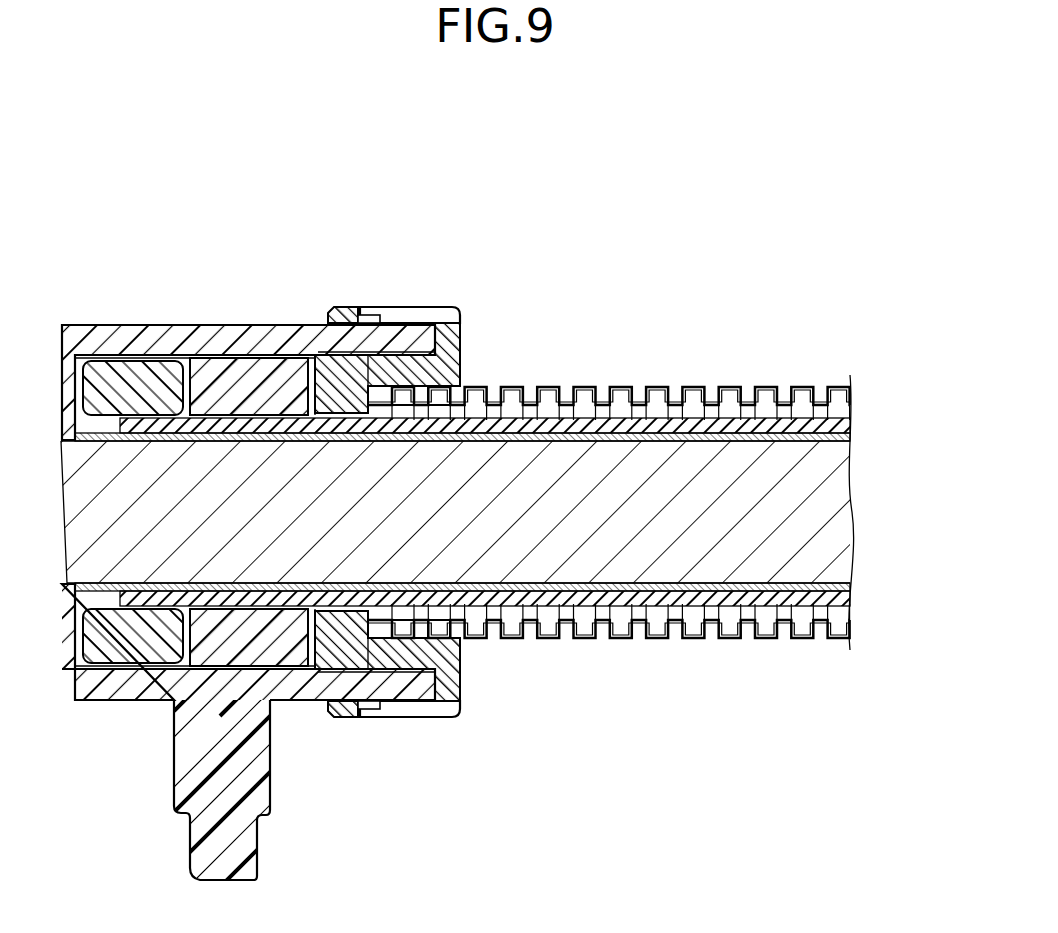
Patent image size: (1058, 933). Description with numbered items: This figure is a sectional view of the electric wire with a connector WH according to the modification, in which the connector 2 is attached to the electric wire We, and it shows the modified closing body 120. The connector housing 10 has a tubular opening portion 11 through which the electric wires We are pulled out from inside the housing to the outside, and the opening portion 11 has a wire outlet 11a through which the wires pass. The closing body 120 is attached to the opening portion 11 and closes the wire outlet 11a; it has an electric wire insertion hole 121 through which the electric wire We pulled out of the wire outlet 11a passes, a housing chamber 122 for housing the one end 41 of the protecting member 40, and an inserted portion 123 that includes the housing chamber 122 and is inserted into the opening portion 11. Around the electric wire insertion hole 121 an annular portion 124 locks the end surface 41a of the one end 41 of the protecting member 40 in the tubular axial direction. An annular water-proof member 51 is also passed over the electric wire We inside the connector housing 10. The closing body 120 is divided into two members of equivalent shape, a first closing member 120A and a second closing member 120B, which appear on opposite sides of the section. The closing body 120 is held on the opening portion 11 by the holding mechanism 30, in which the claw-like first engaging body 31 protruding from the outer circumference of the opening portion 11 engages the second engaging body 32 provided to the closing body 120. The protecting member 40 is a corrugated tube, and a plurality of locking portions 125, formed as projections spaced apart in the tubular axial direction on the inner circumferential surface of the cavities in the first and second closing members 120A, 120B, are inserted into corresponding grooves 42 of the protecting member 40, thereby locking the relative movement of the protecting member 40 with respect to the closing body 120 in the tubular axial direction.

The electric wire with a connector WH is at (532, 125).
The electric wire We is at (856, 517).
The connector 2 is at (100, 243).
The connector housing 10 is at (146, 304).
The opening portion 11 is at (316, 356).
The wire outlet 11a is at (463, 345).
The annular water-proof member 51 is at (227, 362).
The one end of the protecting member 41 is at (418, 403).
The end surface of the one end 41a is at (276, 410).
The groove 42 is at (382, 403).
The protecting member 40 is at (736, 342).
The holding mechanism 30 is at (372, 222).
The first engaging body 31 is at (340, 307).
The second engaging body 32 is at (366, 315).
The closing body 120 is at (397, 737).
The first closing member 120A is at (438, 307).
The second closing member 120B is at (466, 705).
The electric wire insertion hole 121 is at (313, 672).
The housing chamber 122 is at (446, 633).
The inserted portion 123 is at (408, 735).
The annular portion 124 is at (379, 340).
The locking portion 125 is at (453, 372).